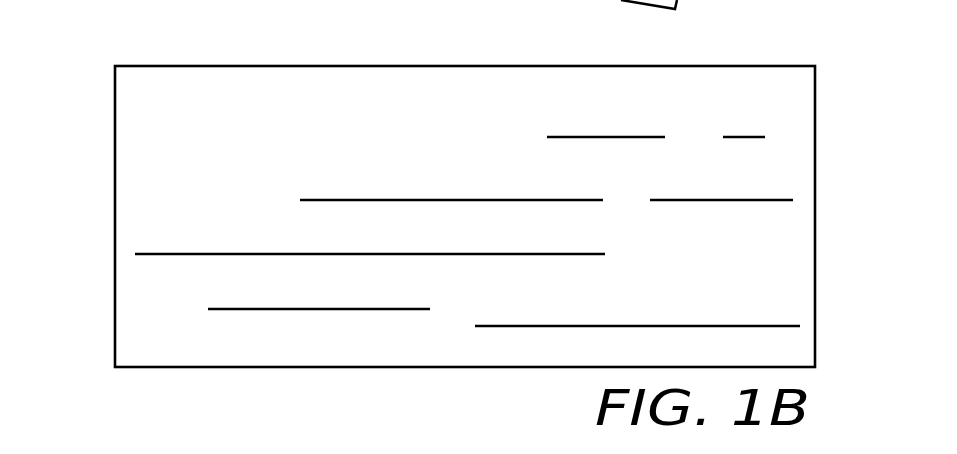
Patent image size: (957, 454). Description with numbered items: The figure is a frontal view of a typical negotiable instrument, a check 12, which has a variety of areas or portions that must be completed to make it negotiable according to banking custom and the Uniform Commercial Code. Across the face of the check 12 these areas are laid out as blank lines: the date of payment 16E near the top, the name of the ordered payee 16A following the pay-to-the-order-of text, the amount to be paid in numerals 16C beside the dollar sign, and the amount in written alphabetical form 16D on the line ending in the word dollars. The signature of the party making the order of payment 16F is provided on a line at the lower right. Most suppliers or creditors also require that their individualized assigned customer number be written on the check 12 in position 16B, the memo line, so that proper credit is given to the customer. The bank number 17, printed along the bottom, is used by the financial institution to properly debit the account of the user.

The check 12 is at (736, 65).
The name of the ordered payee 16A is at (357, 177).
The customer number position 16B is at (408, 296).
The amount to be paid in numerals 16C is at (752, 190).
The amount to be paid in written alphabetical form 16D is at (180, 245).
The date of payment 16E is at (622, 115).
The signature of the party making the order of payment 16F is at (710, 313).
The bank number 17 is at (200, 348).